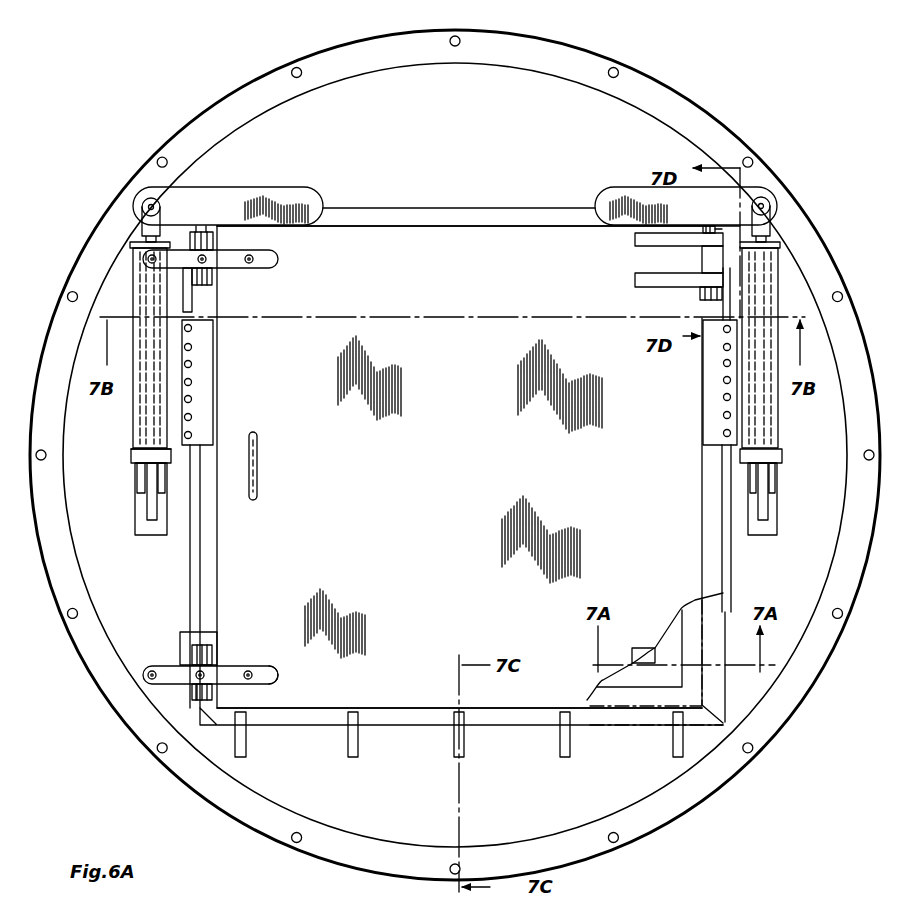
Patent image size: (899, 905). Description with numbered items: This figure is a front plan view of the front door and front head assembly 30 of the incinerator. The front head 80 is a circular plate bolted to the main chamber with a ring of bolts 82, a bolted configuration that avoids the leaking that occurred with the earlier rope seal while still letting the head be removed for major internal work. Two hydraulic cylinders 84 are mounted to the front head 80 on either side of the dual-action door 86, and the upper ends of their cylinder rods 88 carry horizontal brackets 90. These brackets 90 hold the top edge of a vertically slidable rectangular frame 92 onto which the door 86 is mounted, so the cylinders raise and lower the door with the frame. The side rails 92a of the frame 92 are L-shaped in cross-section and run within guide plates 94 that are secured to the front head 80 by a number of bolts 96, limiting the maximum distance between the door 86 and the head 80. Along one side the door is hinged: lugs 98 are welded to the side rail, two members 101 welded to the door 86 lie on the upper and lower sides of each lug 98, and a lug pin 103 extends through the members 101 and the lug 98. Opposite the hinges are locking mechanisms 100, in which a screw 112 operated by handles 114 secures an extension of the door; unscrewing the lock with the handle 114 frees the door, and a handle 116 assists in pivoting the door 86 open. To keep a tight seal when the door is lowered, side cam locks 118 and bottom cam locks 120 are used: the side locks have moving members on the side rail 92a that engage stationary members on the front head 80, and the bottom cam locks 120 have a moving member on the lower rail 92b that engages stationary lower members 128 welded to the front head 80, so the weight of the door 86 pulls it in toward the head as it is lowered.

The front door and front head assembly 30 is at (130, 473).
The front head 80 is at (497, 127).
The bolts 82 is at (163, 158).
The hydraulic cylinders 84 is at (147, 418).
The dual-action door 86 is at (392, 573).
The cylinder rods 88 is at (143, 237).
The horizontal brackets 90 is at (296, 170).
The rectangular frame 92 is at (487, 208).
The side rails 92a is at (207, 553).
The lower rail 92b is at (370, 208).
The guide plates 94 is at (203, 407).
The bolts 96 is at (193, 363).
The lugs 98 is at (700, 257).
The locking mechanisms 100 is at (220, 272).
The members 101 is at (633, 239).
The lug pin 103 is at (705, 228).
The screw 112 is at (203, 675).
The handles 114 is at (250, 682).
The handle 116 is at (257, 483).
The side cam locks 118 is at (180, 278).
The bottom cam locks 120 is at (358, 728).
The stationary lower members 128 is at (248, 748).